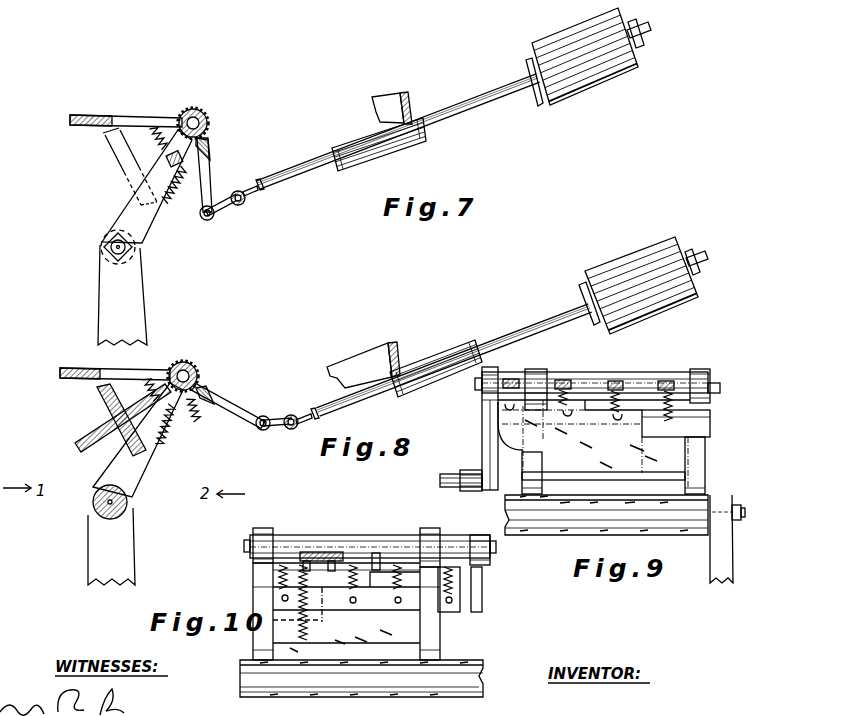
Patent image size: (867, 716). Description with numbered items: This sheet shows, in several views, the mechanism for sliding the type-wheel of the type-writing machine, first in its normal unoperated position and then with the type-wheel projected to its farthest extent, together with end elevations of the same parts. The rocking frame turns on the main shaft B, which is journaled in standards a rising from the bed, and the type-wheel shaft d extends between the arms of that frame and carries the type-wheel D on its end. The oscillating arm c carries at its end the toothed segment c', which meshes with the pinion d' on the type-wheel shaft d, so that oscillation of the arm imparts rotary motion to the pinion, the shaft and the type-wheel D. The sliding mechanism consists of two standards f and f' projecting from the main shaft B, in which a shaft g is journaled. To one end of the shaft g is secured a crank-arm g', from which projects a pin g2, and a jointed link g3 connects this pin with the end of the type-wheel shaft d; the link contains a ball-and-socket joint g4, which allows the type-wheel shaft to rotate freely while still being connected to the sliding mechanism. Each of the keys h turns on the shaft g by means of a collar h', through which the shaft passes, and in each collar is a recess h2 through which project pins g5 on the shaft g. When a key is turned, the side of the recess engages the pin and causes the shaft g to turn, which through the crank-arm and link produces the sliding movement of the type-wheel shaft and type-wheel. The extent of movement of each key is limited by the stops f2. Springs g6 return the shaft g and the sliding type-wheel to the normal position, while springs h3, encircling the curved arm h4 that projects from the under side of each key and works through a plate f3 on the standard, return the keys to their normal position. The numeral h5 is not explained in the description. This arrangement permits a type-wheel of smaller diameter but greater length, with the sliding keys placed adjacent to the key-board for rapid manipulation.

In FIG. 7, the standards a is at (122, 287).
In FIG. 8, the standards a is at (111, 546).
In FIG. 9, the standards a is at (727, 539).
In FIG. 9, the main shaft of the rocking frame B is at (600, 515).
In FIG. 10, the main shaft of the rocking frame B is at (361, 678).
In FIG. 7, the oscillating arm c is at (388, 108).
In FIG. 8, the oscillating arm c is at (359, 365).
In FIG. 7, the toothed segment c' is at (414, 107).
In FIG. 8, the toothed segment c' is at (401, 359).
In FIG. 7, the type-wheel shaft d is at (456, 100).
In FIG. 8, the type-wheel shaft d is at (507, 336).
In FIG. 7, the pinion d' is at (379, 144).
In FIG. 8, the pinion d' is at (436, 371).
In FIG. 7, the type-wheel D is at (533, 28).
In FIG. 8, the type-wheel D is at (630, 258).
In FIG. 8, the standard f is at (138, 451).
In FIG. 9, the standard f is at (613, 465).
In FIG. 10, the standard f is at (353, 611).
In FIG. 7, the standard f' is at (147, 186).
In FIG. 8, the standard f' is at (111, 420).
In FIG. 9, the standard f' is at (715, 470).
In FIG. 10, the standard f' is at (244, 585).
In FIG. 7, the stops f2 is at (120, 142).
In FIG. 9, the stops f2 is at (505, 410).
In FIG. 10, the stops f2 is at (393, 580).
In FIG. 8, the plate f3 is at (165, 418).
In FIG. 9, the plate f3 is at (677, 421).
In FIG. 10, the plate f3 is at (373, 599).
In FIG. 7, the shaft g is at (202, 123).
In FIG. 8, the shaft g is at (183, 365).
In FIG. 9, the shaft g is at (605, 387).
In FIG. 10, the shaft g is at (360, 546).
In FIG. 7, the crank-arm g' is at (215, 175).
In FIG. 8, the crank-arm g' is at (229, 405).
In FIG. 9, the crank-arm g' is at (496, 428).
In FIG. 10, the crank-arm g' is at (485, 589).
In FIG. 7, the pin g2 is at (206, 221).
In FIG. 8, the pin g2 is at (261, 431).
In FIG. 9, the pin g2 is at (470, 491).
In FIG. 7, the jointed link g3 is at (225, 208).
In FIG. 8, the jointed link g3 is at (278, 429).
In FIG. 7, the ball-and-socket joint g4 is at (240, 190).
In FIG. 8, the ball-and-socket joint g4 is at (292, 414).
In FIG. 7, the pins g5 is at (210, 149).
In FIG. 8, the pins g5 is at (208, 390).
In FIG. 10, the pins g5 is at (316, 576).
In FIG. 7, the springs g6 is at (170, 188).
In FIG. 8, the springs g6 is at (168, 438).
In FIG. 10, the springs g6 is at (306, 636).
In FIG. 7, the keys h is at (126, 112).
In FIG. 8, the keys h is at (115, 401).
In FIG. 9, the keys h is at (606, 383).
In FIG. 7, the collar h' is at (214, 101).
In FIG. 9, the collar h' is at (588, 388).
In FIG. 10, the collar h' is at (371, 540).
In FIG. 8, the recess h2 is at (197, 372).
In FIG. 10, the recess h2 is at (333, 551).
In FIG. 7, the springs h3 is at (154, 137).
In FIG. 8, the springs h3 is at (146, 386).
In FIG. 10, the springs h3 is at (280, 578).
In FIG. 7, the curved arm h4 is at (167, 159).
In FIG. 8, the curved arm h4 is at (202, 416).
In FIG. 10, the curved arm h4 is at (349, 579).
In FIG. 10, the spring stop h5 is at (462, 581).